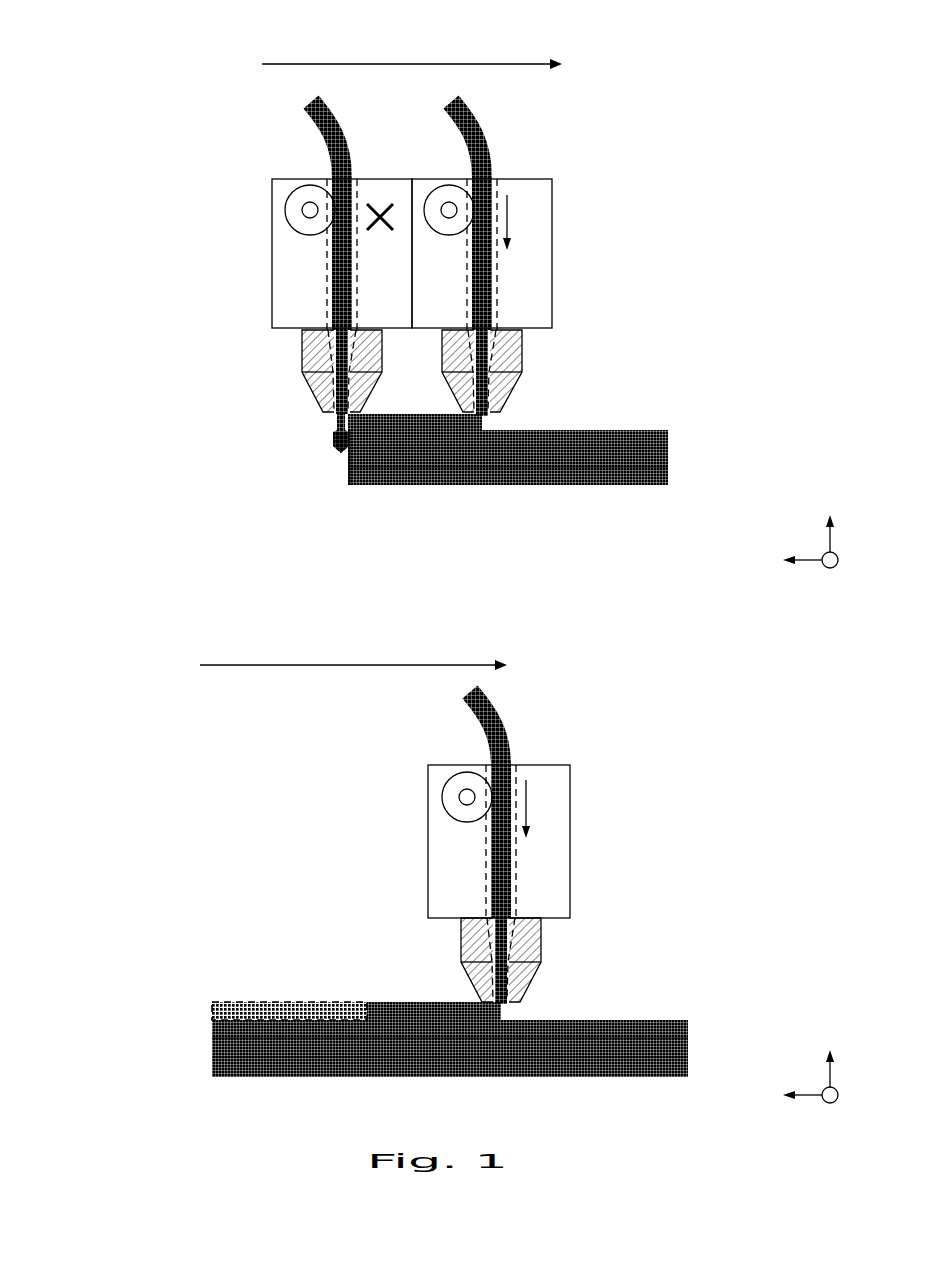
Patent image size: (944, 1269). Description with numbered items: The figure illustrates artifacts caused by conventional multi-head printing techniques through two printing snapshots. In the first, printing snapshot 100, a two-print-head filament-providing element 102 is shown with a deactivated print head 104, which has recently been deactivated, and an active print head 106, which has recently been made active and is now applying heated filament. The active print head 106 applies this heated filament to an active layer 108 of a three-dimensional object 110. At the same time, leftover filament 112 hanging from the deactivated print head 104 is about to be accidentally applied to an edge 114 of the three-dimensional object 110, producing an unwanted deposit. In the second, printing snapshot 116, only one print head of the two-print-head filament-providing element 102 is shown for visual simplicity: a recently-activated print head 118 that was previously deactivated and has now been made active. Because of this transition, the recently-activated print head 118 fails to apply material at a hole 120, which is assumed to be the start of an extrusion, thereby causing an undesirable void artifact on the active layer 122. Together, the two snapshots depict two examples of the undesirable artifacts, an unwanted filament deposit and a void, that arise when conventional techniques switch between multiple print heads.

The printing snapshot 100 is at (115, 32).
The two-print-head filament-providing element 102 is at (239, 134).
The deactivated print head 104 is at (308, 253).
The active print head 106 is at (518, 228).
The active layer 108 is at (660, 418).
The 3D object 110 is at (669, 489).
The leftover filament 112 is at (320, 434).
The edge 114 is at (340, 484).
The printing snapshot 116 is at (115, 622).
The recently-activated print head 118 is at (552, 815).
The hole 120 is at (221, 990).
The active layer 122 is at (672, 1008).